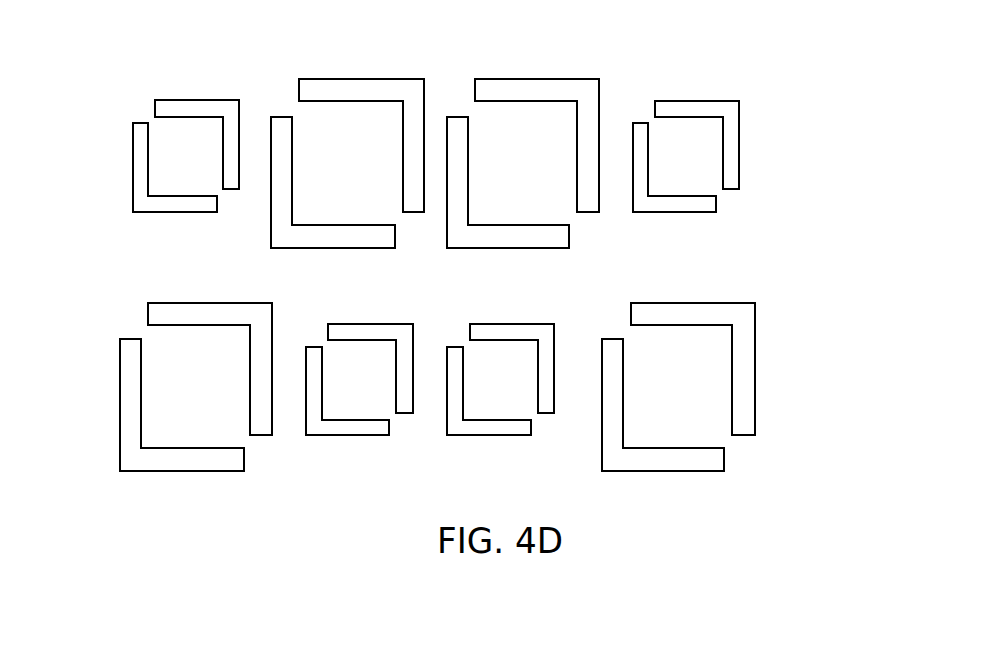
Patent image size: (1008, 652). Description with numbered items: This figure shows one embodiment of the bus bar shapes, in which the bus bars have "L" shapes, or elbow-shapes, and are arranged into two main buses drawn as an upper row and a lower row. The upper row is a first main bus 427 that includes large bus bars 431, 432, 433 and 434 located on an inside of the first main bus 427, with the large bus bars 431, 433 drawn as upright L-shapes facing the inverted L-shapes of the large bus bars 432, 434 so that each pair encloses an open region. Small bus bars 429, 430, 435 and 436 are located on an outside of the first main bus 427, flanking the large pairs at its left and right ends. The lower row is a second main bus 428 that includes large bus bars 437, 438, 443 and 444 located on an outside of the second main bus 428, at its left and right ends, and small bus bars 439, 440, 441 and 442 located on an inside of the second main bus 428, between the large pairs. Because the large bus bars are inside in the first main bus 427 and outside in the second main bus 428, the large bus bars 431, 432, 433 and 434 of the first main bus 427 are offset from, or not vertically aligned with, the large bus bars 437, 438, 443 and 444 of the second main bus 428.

The first main bus 427 is at (462, 134).
The second main bus 428 is at (470, 358).
The small bus bar 429 is at (133, 157).
The small bus bar 430 is at (195, 100).
The large bus bar 431 is at (292, 170).
The large bus bar 432 is at (360, 79).
The large bus bar 433 is at (468, 170).
The large bus bar 434 is at (537, 79).
The small bus bar 435 is at (648, 160).
The small bus bar 436 is at (695, 101).
The large bus bar 437 is at (120, 392).
The large bus bar 438 is at (213, 303).
The small bus bar 439 is at (322, 383).
The small bus bar 440 is at (368, 324).
The small bus bar 441 is at (463, 383).
The small bus bar 442 is at (510, 324).
The large bus bar 443 is at (623, 393).
The large bus bar 444 is at (690, 303).